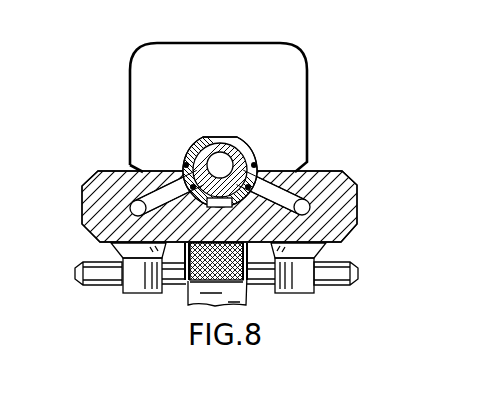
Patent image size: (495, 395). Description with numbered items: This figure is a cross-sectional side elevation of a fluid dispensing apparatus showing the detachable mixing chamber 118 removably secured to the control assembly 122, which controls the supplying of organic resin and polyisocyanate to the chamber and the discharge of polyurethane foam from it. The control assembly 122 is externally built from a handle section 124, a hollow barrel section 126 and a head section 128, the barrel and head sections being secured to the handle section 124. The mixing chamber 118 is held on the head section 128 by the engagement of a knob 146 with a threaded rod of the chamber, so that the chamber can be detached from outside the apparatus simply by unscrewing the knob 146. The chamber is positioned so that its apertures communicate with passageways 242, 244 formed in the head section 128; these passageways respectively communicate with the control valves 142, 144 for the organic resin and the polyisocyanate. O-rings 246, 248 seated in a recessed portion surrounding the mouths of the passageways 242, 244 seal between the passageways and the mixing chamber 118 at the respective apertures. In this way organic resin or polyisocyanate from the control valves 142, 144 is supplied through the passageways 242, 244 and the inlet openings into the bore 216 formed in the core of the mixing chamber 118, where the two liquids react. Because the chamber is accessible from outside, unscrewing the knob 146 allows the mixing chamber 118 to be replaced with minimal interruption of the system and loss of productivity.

The detachable mixing chamber 118 is at (252, 148).
The control assembly 122 is at (92, 172).
The handle section 124 is at (197, 290).
The hollow barrel section 126 is at (297, 73).
The head section 128 is at (343, 178).
The control valve 142 is at (313, 285).
The control valve 144 is at (133, 278).
The knob 146 is at (253, 253).
The bore 216 is at (221, 163).
The passageway 242 is at (300, 190).
The passageway 244 is at (148, 193).
The O-ring 246 is at (262, 160).
The O-ring 248 is at (183, 162).